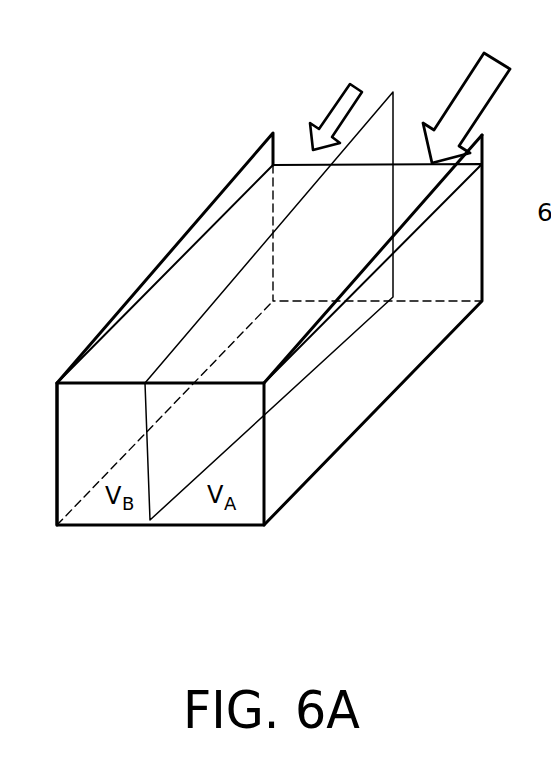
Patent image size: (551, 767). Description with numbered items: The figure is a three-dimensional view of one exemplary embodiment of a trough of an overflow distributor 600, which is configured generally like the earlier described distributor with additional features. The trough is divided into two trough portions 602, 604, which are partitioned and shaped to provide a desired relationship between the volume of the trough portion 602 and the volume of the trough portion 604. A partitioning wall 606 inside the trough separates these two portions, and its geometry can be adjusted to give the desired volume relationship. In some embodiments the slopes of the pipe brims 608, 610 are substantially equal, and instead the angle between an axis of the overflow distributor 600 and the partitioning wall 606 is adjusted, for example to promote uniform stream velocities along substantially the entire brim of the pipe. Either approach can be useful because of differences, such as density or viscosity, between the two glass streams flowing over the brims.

The overflow distributor 600 is at (172, 172).
The trough portion 602 is at (232, 463).
The trough portion 604 is at (93, 450).
The partitioning wall 606 is at (377, 81).
The pipe brim 608 is at (484, 142).
The pipe brim 610 is at (227, 185).